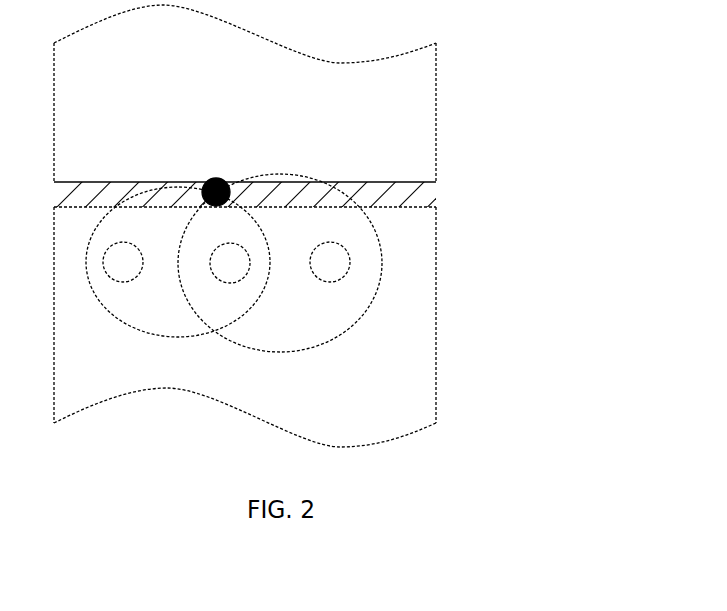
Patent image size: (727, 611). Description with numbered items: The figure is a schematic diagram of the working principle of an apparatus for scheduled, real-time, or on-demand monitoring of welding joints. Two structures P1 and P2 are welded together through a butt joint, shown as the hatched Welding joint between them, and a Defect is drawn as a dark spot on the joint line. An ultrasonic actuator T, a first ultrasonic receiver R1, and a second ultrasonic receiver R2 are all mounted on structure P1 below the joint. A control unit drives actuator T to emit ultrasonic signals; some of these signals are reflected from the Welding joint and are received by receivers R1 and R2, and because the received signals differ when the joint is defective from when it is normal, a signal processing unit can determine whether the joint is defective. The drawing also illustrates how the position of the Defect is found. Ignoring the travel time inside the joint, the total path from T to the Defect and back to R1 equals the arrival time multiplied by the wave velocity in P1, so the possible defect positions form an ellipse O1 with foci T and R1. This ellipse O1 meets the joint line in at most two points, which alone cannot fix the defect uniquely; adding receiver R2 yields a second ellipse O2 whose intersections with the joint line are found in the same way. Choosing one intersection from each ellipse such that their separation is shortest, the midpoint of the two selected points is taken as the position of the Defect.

The structure P1 is at (245, 327).
The structure P2 is at (245, 93).
The welding joint Welding joint is at (324, 195).
The defect Defect is at (206, 172).
The ultrasonic actuator T is at (213, 209).
The first ultrasonic receiver R1 is at (206, 203).
The second ultrasonic receiver R2 is at (226, 203).
The ellipse O1 is at (178, 262).
The ellipse O2 is at (280, 263).